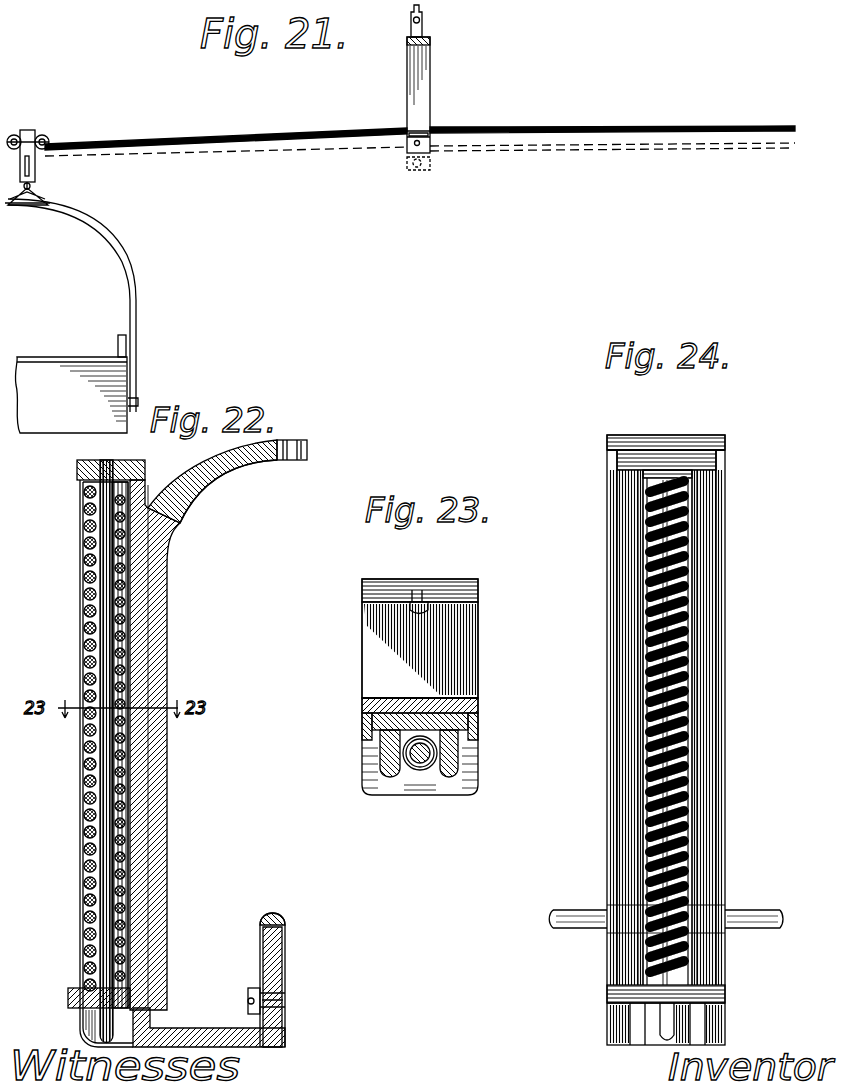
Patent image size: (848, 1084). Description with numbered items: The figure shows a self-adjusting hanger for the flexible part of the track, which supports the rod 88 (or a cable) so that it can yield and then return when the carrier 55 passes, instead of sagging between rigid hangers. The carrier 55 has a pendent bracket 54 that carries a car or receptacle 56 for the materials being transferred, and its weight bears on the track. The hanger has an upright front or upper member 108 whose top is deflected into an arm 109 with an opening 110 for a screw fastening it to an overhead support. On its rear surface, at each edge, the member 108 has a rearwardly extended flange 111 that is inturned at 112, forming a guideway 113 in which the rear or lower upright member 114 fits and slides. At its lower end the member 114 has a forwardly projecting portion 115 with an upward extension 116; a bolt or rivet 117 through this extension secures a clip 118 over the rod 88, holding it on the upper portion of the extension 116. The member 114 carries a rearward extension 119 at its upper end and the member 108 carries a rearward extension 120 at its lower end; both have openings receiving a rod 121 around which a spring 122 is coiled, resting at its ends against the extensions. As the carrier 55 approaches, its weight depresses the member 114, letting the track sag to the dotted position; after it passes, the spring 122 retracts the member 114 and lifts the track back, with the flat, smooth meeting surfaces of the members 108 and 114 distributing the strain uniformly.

In FIG. 21, the pendent bracket 54 is at (32, 182).
In FIG. 21, the carrier 55 is at (36, 137).
In FIG. 21, the car or receptacle 56 is at (73, 316).
In FIG. 22, the rod 88 is at (278, 915).
In FIG. 24, the rod 88 is at (757, 912).
In FIG. 21, the upright front or upper member 108 is at (422, 104).
In FIG. 22, the upright front or upper member 108 is at (167, 613).
In FIG. 23, the upright front or upper member 108 is at (456, 698).
In FIG. 24, the upright front or upper member 108 is at (727, 700).
In FIG. 21, the deflected part or arm 109 is at (430, 42).
In FIG. 22, the deflected part or arm 109 is at (234, 463).
In FIG. 24, the deflected part or arm 109 is at (672, 446).
In FIG. 22, the opening 110 is at (298, 441).
In FIG. 22, the rearwardly extended flange 111 is at (189, 500).
In FIG. 23, the rearwardly extended flange 111 is at (368, 732).
In FIG. 23, the inturned portion 112 is at (372, 752).
In FIG. 23, the guideway 113 is at (477, 716).
In FIG. 22, the rear or lower upright member 114 is at (138, 895).
In FIG. 23, the rear or lower upright member 114 is at (370, 716).
In FIG. 24, the rear or lower upright member 114 is at (636, 834).
In FIG. 22, the forwardly projecting portion 115 is at (185, 1036).
In FIG. 23, the forwardly projecting portion 115 is at (376, 678).
In FIG. 21, the upward extension 116 is at (413, 135).
In FIG. 22, the upward extension 116 is at (272, 972).
In FIG. 24, the upward extension 116 is at (612, 900).
In FIG. 22, the bolt or rivet 117 is at (286, 1003).
In FIG. 23, the bolt or rivet 117 is at (410, 610).
In FIG. 24, the bolt or rivet 117 is at (728, 1027).
In FIG. 22, the clip 118 is at (286, 940).
In FIG. 23, the clip 118 is at (388, 584).
In FIG. 22, the rearward extension 119 is at (77, 470).
In FIG. 24, the rearward extension 119 is at (700, 470).
In FIG. 22, the rearward extension 120 is at (70, 1002).
In FIG. 23, the rearward extension 120 is at (430, 792).
In FIG. 24, the rearward extension 120 is at (727, 992).
In FIG. 22, the rod 121 is at (100, 612).
In FIG. 23, the rod 121 is at (412, 770).
In FIG. 24, the rod 121 is at (680, 574).
In FIG. 22, the spring 122 is at (88, 822).
In FIG. 23, the spring 122 is at (434, 767).
In FIG. 24, the spring 122 is at (688, 645).